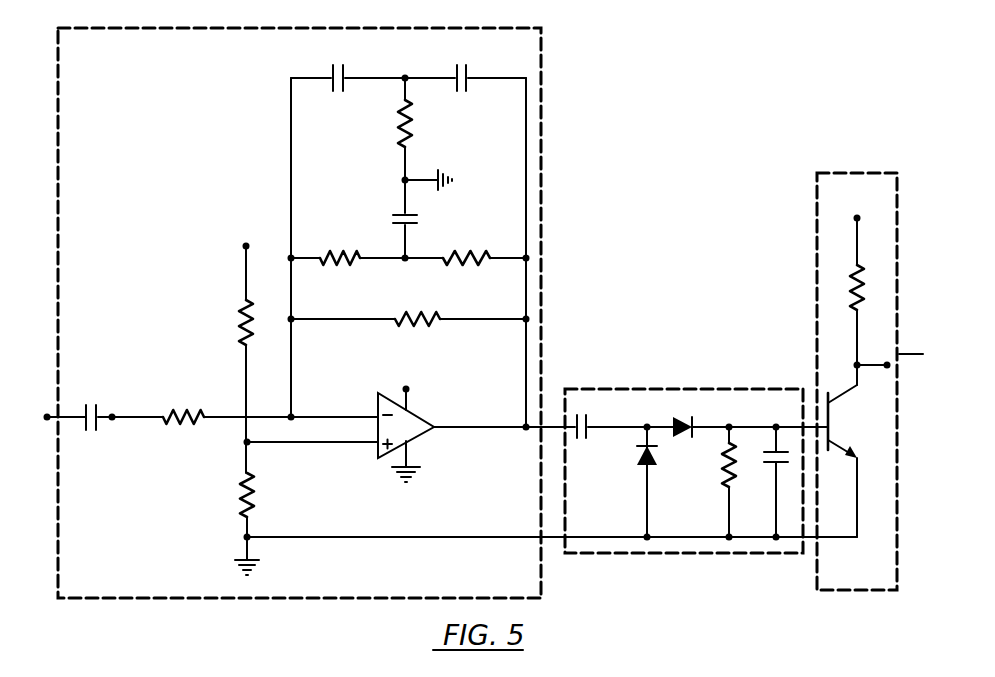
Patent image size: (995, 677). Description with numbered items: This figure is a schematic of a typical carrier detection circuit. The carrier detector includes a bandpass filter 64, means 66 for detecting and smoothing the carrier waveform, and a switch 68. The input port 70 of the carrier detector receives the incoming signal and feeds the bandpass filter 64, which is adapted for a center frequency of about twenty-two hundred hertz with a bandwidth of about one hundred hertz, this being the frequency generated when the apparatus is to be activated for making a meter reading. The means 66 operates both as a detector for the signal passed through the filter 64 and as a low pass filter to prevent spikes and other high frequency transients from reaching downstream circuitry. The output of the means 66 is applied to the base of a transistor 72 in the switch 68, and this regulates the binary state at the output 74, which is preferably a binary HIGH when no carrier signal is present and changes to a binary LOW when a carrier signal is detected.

The bandpass filter 64 is at (542, 243).
The means for detecting and smoothing the carrier waveform 66 is at (630, 538).
The switch 68 is at (874, 381).
The input port 70 is at (42, 447).
The transistor 72 is at (832, 429).
The output 74 is at (885, 362).